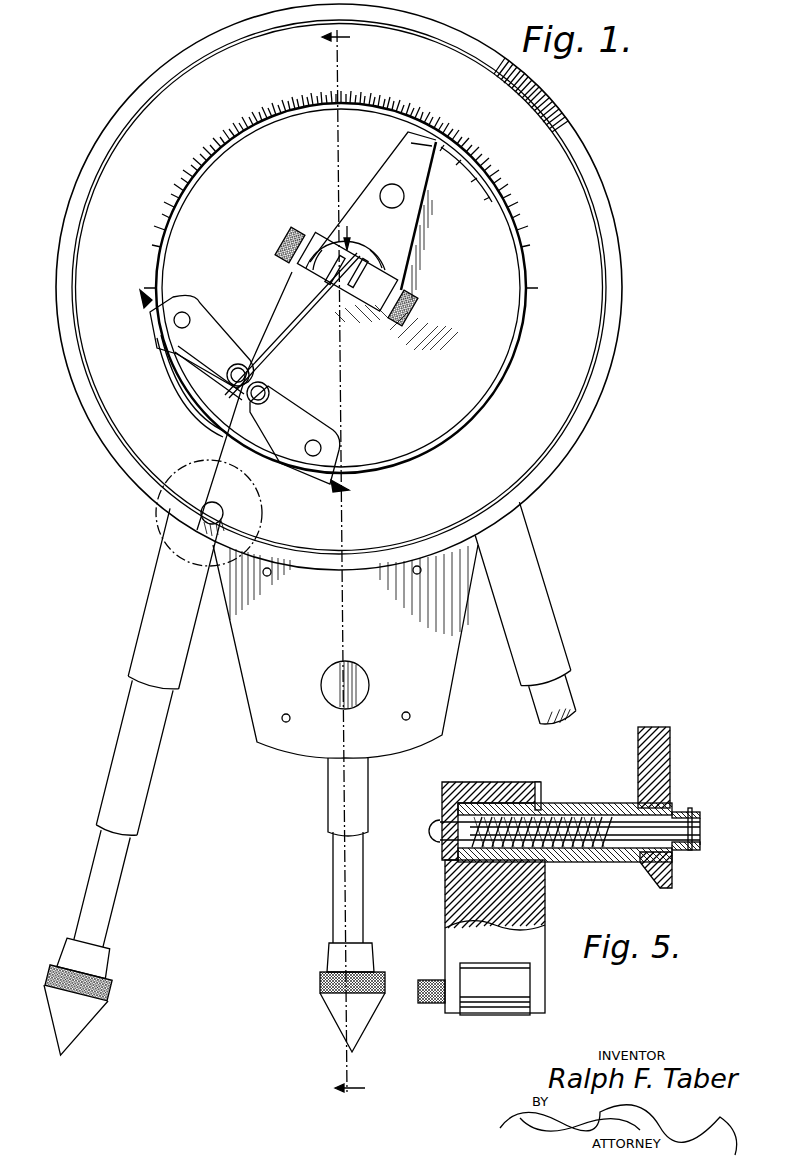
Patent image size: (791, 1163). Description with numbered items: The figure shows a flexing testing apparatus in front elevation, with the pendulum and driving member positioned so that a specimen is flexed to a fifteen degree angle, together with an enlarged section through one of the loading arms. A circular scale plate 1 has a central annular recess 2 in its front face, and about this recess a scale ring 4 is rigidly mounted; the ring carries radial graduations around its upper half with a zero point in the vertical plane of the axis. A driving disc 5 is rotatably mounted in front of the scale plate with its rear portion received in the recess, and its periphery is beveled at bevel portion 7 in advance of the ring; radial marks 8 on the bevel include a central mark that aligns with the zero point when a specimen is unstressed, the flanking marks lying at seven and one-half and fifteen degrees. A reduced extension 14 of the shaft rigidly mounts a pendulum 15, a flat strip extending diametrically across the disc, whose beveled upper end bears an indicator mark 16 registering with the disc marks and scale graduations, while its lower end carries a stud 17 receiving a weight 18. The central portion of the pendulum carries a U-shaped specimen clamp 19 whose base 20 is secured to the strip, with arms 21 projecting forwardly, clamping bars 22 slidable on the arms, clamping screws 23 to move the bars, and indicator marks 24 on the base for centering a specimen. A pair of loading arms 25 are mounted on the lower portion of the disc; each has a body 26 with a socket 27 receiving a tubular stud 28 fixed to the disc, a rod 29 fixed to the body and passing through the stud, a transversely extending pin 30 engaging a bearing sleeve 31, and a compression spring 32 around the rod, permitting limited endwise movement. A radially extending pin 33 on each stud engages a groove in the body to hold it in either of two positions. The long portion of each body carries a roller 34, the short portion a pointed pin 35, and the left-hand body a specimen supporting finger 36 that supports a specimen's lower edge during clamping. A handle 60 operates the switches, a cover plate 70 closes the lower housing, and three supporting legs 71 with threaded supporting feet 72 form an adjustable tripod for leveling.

In FIG. 1, the scale plate 1 is at (179, 70).
In FIG. 1, the central annular recess 2 is at (354, 563).
In FIG. 1, the scale ring 4 is at (118, 150).
In FIG. 1, the driving disc 5 is at (492, 376).
In FIG. 5, the driving disc 5 is at (670, 748).
In FIG. 1, the bevel portion 7 is at (440, 446).
In FIG. 5, the bevel portion 7 is at (647, 882).
In FIG. 1, the radial marks 8 is at (460, 168).
In FIG. 1, the reduced extension 14 is at (335, 287).
In FIG. 1, the pendulum 15 is at (276, 308).
In FIG. 1, the indicator mark 16 is at (425, 136).
In FIG. 1, the stud 17 is at (214, 512).
In FIG. 1, the weight 18 is at (158, 532).
In FIG. 1, the specimen clamp 19 is at (349, 236).
In FIG. 1, the base 20 is at (396, 281).
In FIG. 1, the arms 21 is at (318, 245).
In FIG. 1, the clamping bars 22 is at (330, 283).
In FIG. 1, the clamping screws 23 is at (286, 238).
In FIG. 1, the indicator marks 24 is at (360, 258).
In FIG. 1, the loading arms 25 is at (148, 323).
In FIG. 5, the loading arms 25 is at (470, 782).
In FIG. 1, the body 26 is at (213, 337).
In FIG. 5, the body 26 is at (458, 946).
In FIG. 5, the socket 27 is at (445, 808).
In FIG. 5, the tubular stud 28 is at (582, 808).
In FIG. 5, the rod 29 is at (627, 823).
In FIG. 5, the transversely extending pin 30 is at (690, 808).
In FIG. 5, the bearing sleeve 31 is at (687, 853).
In FIG. 5, the compression spring 32 is at (565, 813).
In FIG. 5, the radially extending pin 33 is at (541, 786).
In FIG. 1, the roller 34 is at (252, 367).
In FIG. 5, the roller 34 is at (505, 1013).
In FIG. 1, the pin 35 is at (146, 308).
In FIG. 1, the specimen supporting finger 36 is at (230, 396).
In FIG. 1, the handle 60 is at (370, 688).
In FIG. 1, the cover plate 70 is at (245, 668).
In FIG. 1, the supporting legs 71 is at (537, 615).
In FIG. 1, the supporting feet 72 is at (100, 970).